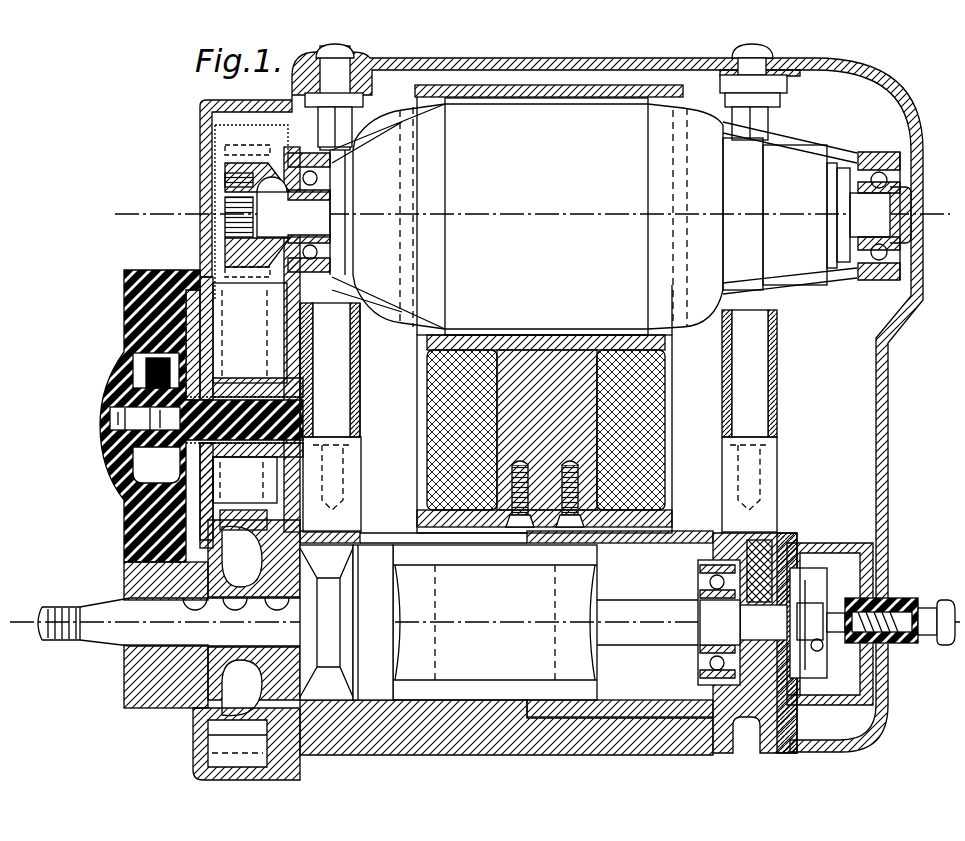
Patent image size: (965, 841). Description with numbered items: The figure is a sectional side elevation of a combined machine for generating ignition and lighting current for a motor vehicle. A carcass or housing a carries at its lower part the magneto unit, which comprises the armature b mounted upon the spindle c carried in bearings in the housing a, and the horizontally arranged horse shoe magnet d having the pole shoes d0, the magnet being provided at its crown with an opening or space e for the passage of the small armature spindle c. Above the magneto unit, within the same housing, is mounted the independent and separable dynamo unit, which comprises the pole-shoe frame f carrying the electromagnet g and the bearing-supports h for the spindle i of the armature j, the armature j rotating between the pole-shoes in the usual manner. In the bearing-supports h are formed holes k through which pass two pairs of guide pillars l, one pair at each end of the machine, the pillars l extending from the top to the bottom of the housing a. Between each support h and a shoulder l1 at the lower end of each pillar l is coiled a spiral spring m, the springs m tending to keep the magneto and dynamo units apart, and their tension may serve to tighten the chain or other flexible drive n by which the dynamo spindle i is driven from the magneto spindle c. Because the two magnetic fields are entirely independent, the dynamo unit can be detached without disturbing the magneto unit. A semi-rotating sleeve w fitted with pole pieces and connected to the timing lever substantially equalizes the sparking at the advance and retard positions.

The carcass or housing a is at (213, 192).
The armature b is at (495, 622).
The spindle c is at (787, 622).
The horse shoe magnet d is at (764, 534).
The pole shoes d0 is at (372, 545).
The opening or space e is at (740, 613).
The pole-shoe frame f is at (672, 342).
The electromagnet g is at (665, 440).
The bearing-supports h is at (324, 160).
The spindle i is at (573, 214).
The armature j is at (594, 210).
The holes k is at (368, 100).
The guide pillars l is at (538, 370).
The shoulders l1 is at (792, 460).
The spiral spring m is at (355, 378).
The chain or flexible drive n is at (251, 332).
The semi-rotating sleeve w is at (705, 533).